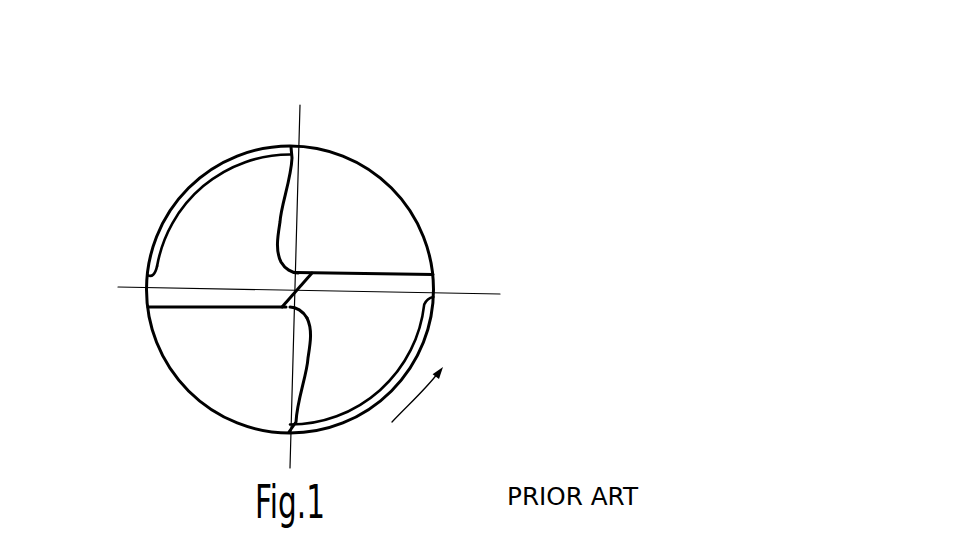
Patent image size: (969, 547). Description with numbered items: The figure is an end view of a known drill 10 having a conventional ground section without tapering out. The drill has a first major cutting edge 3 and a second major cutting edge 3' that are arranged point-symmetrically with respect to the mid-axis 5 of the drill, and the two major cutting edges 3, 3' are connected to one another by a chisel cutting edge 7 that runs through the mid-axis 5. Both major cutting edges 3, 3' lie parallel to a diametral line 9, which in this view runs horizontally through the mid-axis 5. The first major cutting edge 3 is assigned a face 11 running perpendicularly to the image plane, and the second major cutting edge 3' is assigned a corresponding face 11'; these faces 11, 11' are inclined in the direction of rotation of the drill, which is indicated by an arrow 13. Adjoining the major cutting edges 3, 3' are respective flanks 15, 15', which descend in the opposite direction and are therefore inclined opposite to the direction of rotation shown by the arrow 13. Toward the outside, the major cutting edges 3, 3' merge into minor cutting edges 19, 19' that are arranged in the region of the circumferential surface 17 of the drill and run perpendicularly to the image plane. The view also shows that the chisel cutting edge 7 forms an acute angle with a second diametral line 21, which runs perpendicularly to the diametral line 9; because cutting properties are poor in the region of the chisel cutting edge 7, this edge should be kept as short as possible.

The drill 10 is at (400, 131).
The first major cutting edge 3 is at (405, 228).
The second major cutting edge 3' is at (168, 356).
The mid-axis 5 is at (300, 312).
The chisel cutting edge 7 is at (270, 287).
The diametral line 9 is at (482, 293).
The face 11 is at (408, 189).
The face 11' is at (201, 400).
The arrow 13 is at (427, 397).
The flank 15 is at (434, 361).
The flank 15' is at (114, 243).
The circumferential surface 17 is at (230, 158).
The minor cutting edge 19 is at (526, 235).
The minor cutting edge 19' is at (76, 327).
The diametral line 21 is at (302, 128).